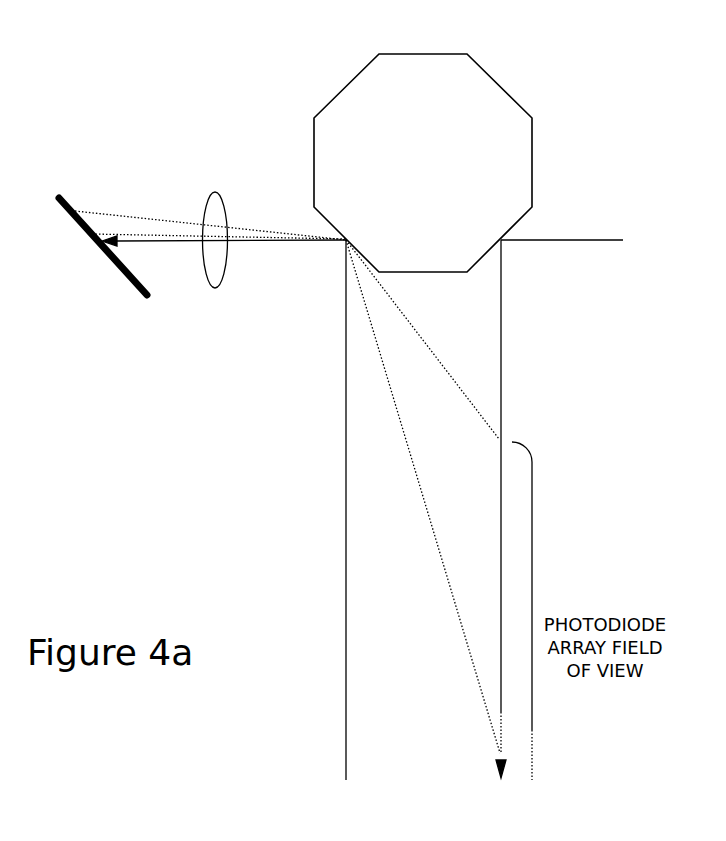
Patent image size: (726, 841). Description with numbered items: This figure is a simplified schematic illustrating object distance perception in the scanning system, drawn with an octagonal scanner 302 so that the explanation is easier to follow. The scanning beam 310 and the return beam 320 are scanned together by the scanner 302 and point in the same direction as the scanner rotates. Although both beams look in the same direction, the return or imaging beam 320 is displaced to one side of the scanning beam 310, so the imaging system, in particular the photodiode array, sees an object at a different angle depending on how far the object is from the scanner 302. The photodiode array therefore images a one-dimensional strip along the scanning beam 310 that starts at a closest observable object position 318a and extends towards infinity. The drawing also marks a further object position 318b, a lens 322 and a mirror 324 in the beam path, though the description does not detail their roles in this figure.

The scanner 302 is at (441, 133).
The scanning beam 310 is at (502, 317).
The object position 318a is at (100, 212).
The second light beam 318b is at (151, 241).
The return beam 320 is at (347, 699).
The lens 322 is at (216, 193).
The mirror 324 is at (137, 297).